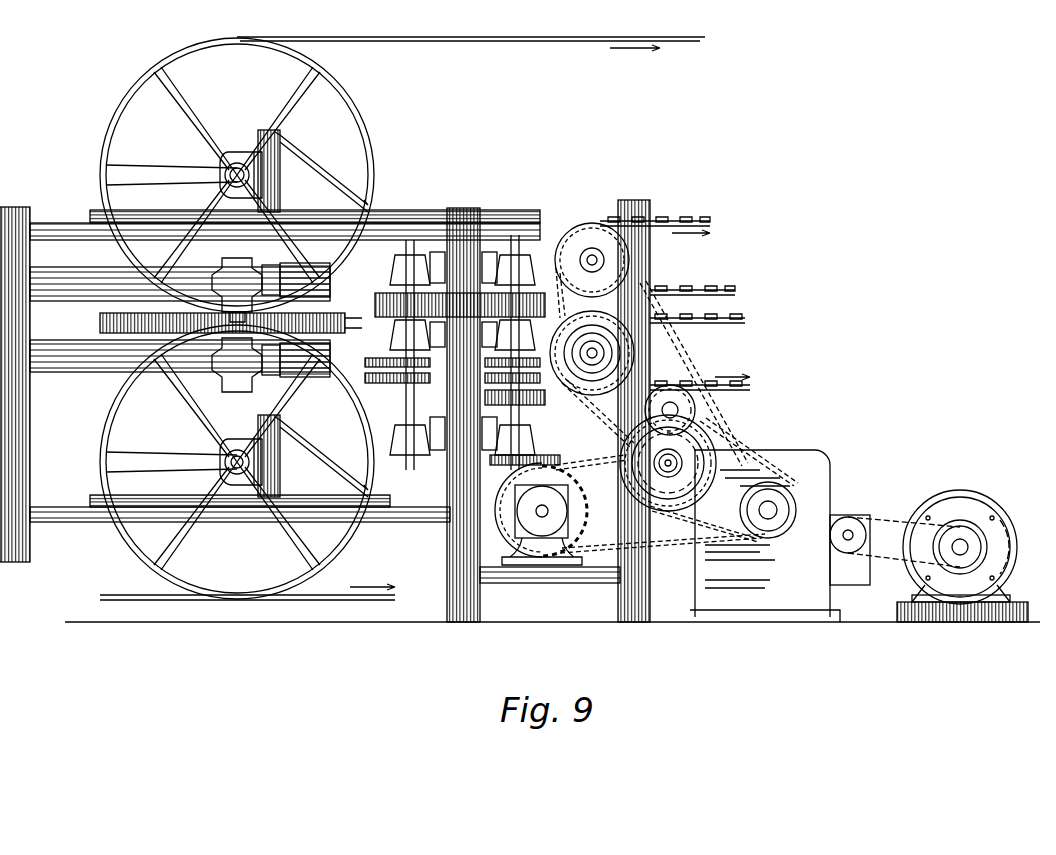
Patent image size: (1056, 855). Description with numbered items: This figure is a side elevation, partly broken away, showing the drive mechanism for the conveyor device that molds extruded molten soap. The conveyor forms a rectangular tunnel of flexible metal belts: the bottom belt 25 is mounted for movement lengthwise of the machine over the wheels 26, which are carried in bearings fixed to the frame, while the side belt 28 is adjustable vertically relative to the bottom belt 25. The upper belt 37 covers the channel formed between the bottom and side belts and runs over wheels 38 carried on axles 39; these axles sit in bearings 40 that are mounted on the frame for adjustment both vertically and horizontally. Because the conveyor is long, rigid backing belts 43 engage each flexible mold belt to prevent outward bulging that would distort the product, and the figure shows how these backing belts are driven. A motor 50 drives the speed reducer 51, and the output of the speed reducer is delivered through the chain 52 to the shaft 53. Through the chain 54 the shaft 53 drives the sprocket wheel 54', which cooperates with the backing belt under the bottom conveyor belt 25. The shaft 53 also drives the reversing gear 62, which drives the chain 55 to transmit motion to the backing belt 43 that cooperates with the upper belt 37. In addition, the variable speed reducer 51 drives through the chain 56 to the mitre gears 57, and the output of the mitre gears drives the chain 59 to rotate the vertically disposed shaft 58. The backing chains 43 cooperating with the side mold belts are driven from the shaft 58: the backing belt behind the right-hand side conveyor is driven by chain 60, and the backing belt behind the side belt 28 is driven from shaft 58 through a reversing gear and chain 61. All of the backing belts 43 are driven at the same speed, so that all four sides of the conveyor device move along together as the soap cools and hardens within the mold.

The bottom belt 25 is at (338, 602).
The wheels 26 is at (298, 556).
The side belt 28 is at (117, 333).
The upper belt 37 is at (555, 42).
The wheels 38 is at (290, 96).
The axles 39 is at (237, 165).
The bearings 40 is at (228, 160).
The backing belts 43 is at (540, 290).
The motor 50 is at (962, 490).
The speed reducer 51 is at (834, 472).
The chain 52 is at (758, 462).
The shaft 53 is at (728, 442).
The chain 54 is at (595, 357).
The sprocket wheel 54' is at (581, 353).
The chain 55 is at (670, 356).
The chain 56 is at (690, 542).
The mitre gears 57 is at (542, 530).
The shaft 58 is at (520, 420).
The chain 59 is at (560, 460).
The chain 60 is at (378, 384).
The chain 61 is at (388, 362).
The reversing gear 62 is at (694, 412).